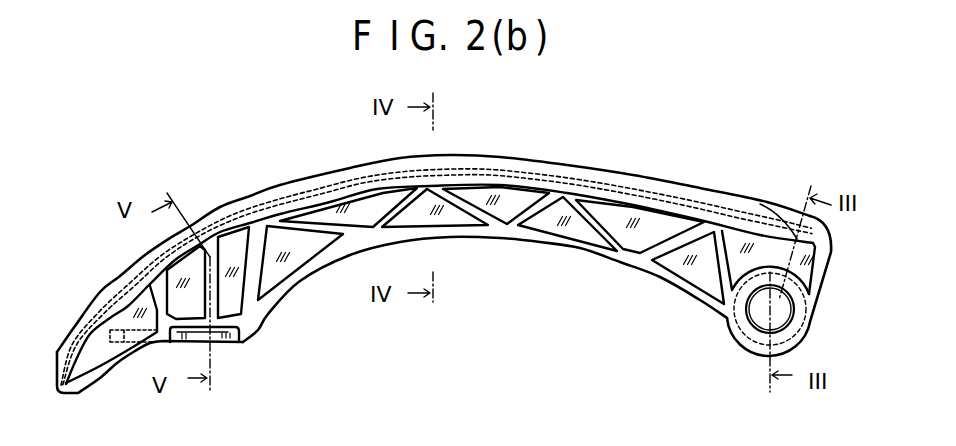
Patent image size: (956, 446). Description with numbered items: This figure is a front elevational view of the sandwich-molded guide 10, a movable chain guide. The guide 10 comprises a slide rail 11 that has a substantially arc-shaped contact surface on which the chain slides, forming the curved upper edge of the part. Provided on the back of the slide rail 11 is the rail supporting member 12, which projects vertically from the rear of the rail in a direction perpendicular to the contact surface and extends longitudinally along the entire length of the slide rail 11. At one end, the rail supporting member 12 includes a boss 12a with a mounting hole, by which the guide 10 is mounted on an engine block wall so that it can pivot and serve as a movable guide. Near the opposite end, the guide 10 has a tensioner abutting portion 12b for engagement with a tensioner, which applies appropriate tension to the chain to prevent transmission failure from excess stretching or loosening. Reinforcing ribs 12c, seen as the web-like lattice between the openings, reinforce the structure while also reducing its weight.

The sandwich-molded guide 10 is at (641, 151).
The slide rail 11 is at (493, 158).
The rail supporting member 12 is at (546, 246).
The boss 12a is at (806, 334).
The tensioner abutting portion 12b is at (224, 342).
The reinforcing ribs 12c is at (414, 198).